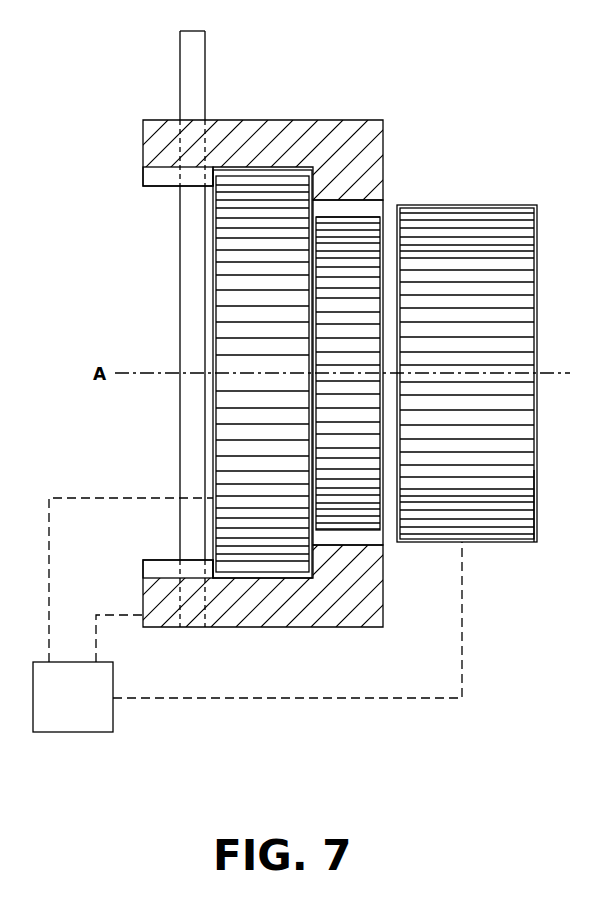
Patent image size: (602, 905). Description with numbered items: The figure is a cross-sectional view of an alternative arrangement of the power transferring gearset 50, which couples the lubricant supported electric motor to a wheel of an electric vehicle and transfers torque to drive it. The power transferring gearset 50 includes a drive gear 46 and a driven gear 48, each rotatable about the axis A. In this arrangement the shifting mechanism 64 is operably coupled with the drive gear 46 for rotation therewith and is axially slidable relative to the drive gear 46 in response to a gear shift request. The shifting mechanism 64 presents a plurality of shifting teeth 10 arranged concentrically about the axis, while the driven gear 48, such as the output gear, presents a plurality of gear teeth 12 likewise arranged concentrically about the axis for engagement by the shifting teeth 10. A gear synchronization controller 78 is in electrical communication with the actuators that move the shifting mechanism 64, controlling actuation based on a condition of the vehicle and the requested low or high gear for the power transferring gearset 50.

The power transferring gearset 50 is at (456, 108).
The shifting mechanism 64 is at (265, 120).
The drive gear 46 is at (213, 245).
The shifting teeth 10 is at (385, 216).
The gear teeth 12 is at (478, 205).
The driven gear 48 is at (537, 480).
The gear synchronization controller 78 is at (247, 615).